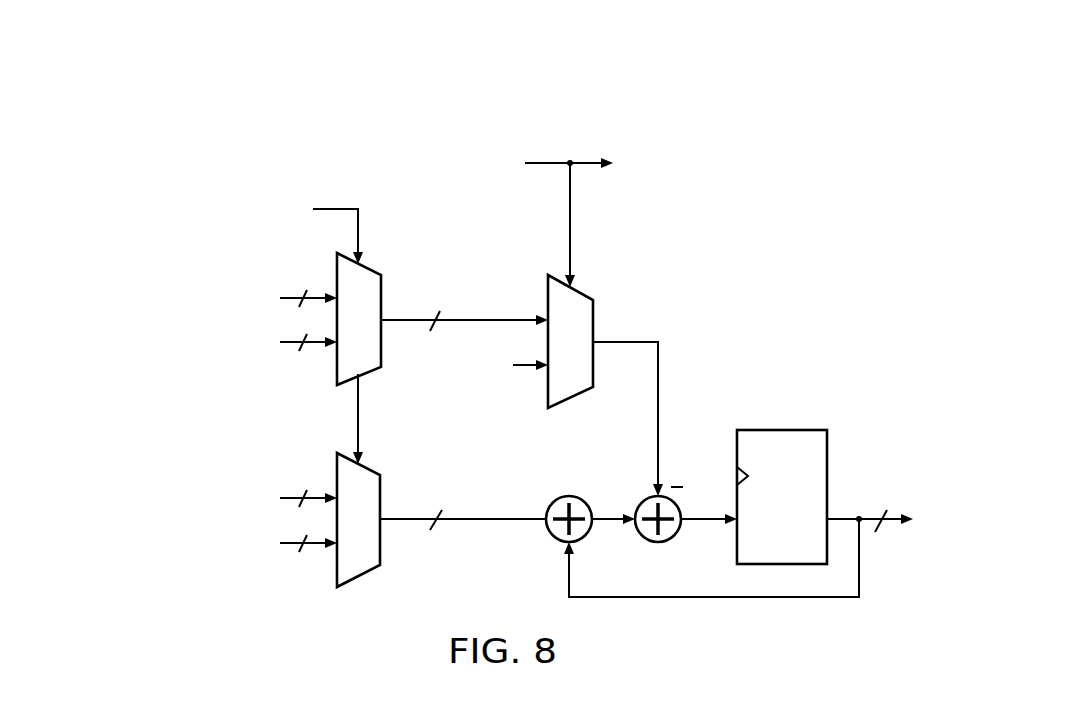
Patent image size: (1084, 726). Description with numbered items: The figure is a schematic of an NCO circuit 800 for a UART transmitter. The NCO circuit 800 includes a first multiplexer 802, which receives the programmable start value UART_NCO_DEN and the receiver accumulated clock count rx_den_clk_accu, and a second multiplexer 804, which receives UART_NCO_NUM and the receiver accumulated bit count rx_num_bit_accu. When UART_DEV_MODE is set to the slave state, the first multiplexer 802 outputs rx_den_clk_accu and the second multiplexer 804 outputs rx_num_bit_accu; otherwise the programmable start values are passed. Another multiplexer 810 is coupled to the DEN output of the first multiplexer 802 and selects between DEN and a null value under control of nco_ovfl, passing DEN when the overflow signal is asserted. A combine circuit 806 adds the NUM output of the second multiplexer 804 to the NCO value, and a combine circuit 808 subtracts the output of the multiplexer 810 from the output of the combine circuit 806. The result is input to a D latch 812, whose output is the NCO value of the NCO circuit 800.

The NCO circuit 800 is at (394, 103).
The first multiplexer 802 is at (381, 293).
The second multiplexer 804 is at (380, 548).
The combine circuit 806 is at (610, 488).
The combine circuit 808 is at (677, 538).
The multiplexer 810 is at (593, 323).
The D latch 812 is at (782, 430).